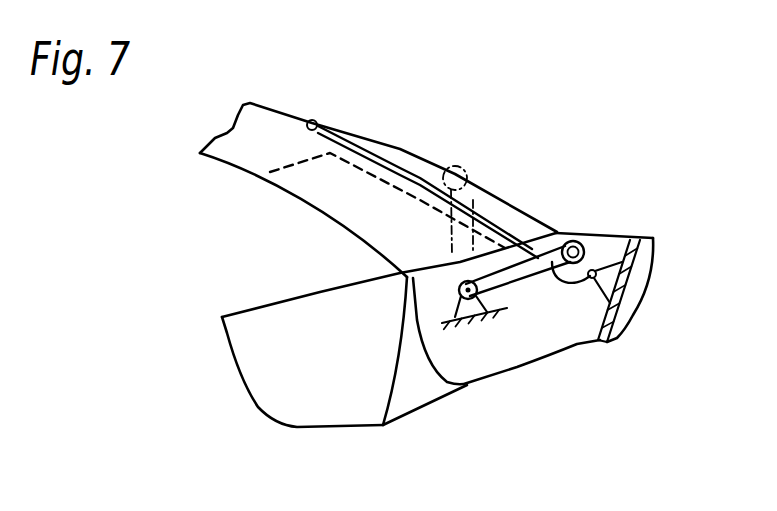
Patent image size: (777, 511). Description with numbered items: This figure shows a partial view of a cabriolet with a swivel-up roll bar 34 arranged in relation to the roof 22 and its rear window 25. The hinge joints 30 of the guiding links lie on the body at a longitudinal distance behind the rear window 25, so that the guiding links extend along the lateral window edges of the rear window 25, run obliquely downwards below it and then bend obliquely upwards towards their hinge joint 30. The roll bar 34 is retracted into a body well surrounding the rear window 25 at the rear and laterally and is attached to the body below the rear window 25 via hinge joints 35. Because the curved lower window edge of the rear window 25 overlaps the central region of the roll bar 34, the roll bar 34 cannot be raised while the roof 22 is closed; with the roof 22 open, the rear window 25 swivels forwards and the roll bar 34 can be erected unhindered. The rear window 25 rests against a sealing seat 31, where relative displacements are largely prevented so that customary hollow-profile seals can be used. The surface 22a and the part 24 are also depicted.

The roof 22 is at (266, 100).
The hood surface 22a is at (335, 203).
The body panel 24 is at (623, 233).
The rear window 25 is at (392, 148).
The hinge joint 30 is at (590, 278).
The sealing seat 31 is at (263, 174).
The swivel-up roll bar 34 is at (476, 185).
The hinge joint 35 is at (468, 300).